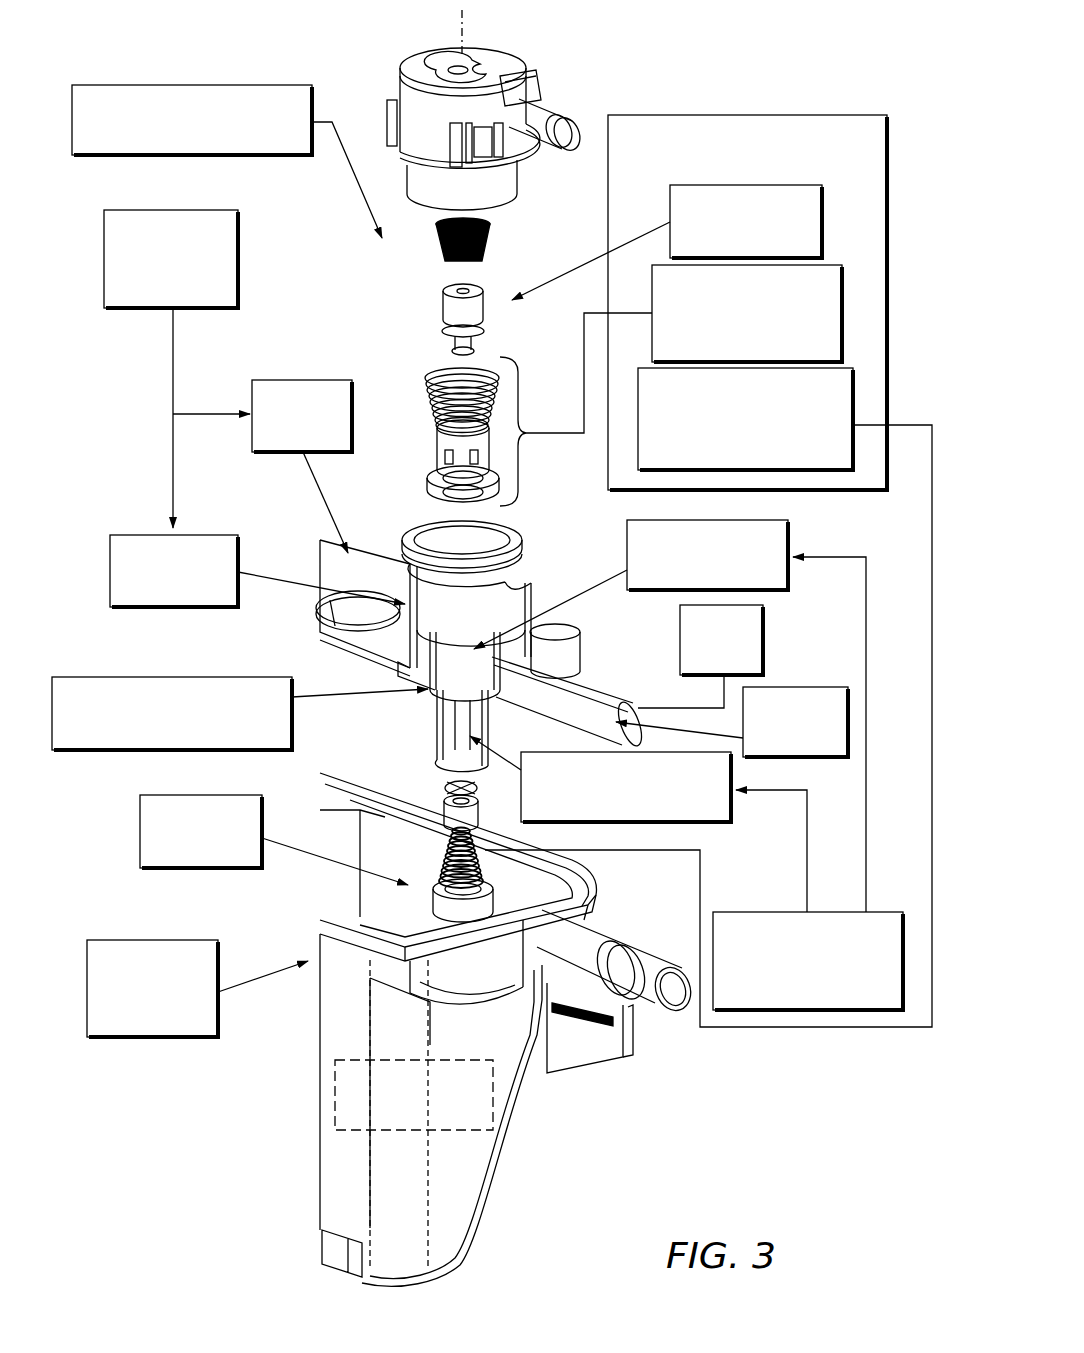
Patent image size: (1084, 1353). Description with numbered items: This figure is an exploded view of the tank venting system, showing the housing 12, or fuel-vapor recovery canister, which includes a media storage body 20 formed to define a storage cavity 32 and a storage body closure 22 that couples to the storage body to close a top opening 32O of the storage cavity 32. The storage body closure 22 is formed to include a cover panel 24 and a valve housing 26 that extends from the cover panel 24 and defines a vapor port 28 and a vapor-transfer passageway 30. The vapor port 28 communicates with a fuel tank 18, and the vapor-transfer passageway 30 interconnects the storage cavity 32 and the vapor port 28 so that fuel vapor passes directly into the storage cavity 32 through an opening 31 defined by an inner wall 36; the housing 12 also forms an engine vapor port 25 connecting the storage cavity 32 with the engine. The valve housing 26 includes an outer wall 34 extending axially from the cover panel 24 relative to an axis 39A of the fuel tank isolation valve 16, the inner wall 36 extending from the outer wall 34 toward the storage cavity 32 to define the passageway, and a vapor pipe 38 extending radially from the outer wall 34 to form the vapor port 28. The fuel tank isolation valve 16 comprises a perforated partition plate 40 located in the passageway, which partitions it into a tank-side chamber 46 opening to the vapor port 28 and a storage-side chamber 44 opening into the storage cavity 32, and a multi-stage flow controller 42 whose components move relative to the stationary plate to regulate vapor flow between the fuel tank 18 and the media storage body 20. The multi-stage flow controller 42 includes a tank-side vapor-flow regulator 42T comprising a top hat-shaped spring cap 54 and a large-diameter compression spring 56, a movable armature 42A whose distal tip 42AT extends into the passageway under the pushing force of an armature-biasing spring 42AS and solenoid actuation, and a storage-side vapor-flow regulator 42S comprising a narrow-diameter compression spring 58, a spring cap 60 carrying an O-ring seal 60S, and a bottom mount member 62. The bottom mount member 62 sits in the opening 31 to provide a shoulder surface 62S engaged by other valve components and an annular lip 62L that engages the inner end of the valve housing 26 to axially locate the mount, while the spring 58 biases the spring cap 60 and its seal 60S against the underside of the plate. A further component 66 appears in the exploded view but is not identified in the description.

The housing 12 is at (84, 274).
The fuel tank isolation valve 16 is at (228, 85).
The fuel tank 18 is at (680, 626).
The media storage body 20 is at (152, 1040).
The storage body closure 22 is at (240, 256).
The cover panel 24 is at (300, 380).
The engine vapor port 25 is at (678, 1002).
The valve housing 26 is at (134, 535).
The vapor port 28 is at (776, 687).
The vapor-transfer passageway 30 is at (876, 912).
The opening 31 is at (455, 762).
The storage cavity 32 is at (493, 1093).
The top opening 32O is at (340, 890).
The outer wall 34 is at (408, 566).
The inner wall 36 is at (372, 640).
The vapor pipe 38 is at (596, 660).
The axis 39A is at (465, 52).
The perforated partition plate 40 is at (92, 677).
The multi-stage flow controller 42 is at (772, 115).
The movable armature 42A is at (822, 222).
The armature-biasing spring 42AS is at (508, 238).
The distal tip 42AT is at (462, 352).
The storage-side vapor-flow regulator 42S is at (853, 413).
The tank-side vapor-flow regulator 42T is at (842, 318).
The storage-side chamber 44 is at (713, 822).
The tank-side chamber 46 is at (627, 548).
The spring cap 54 is at (430, 436).
The compression spring 56 is at (418, 372).
The compression spring 58 is at (440, 852).
The spring cap 60 is at (440, 797).
The O-ring seal 60S is at (438, 777).
The bottom mount member 62 is at (140, 830).
The annular lip 62L is at (476, 930).
The shoulder surface 62S is at (438, 893).
The retainer ring 66 is at (424, 478).